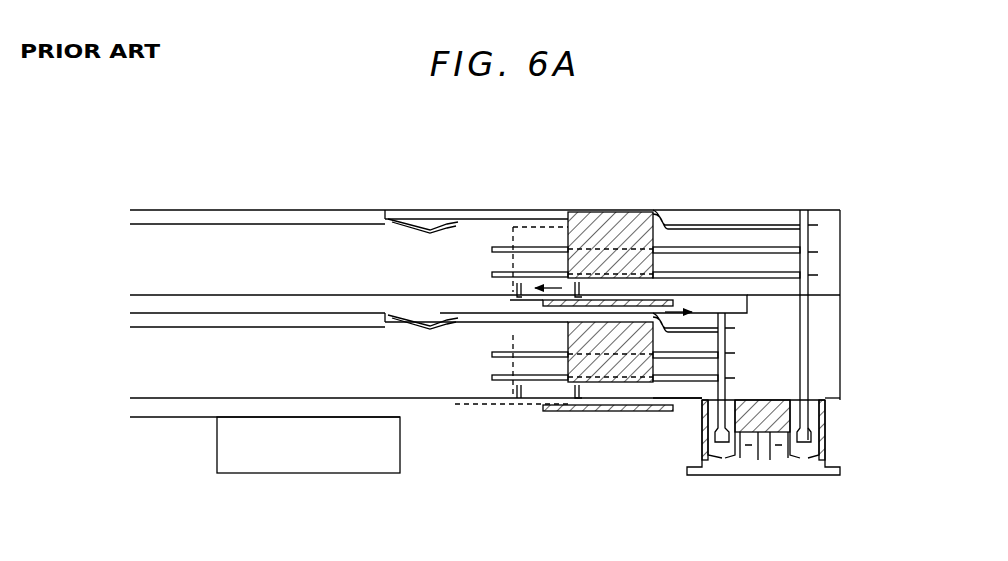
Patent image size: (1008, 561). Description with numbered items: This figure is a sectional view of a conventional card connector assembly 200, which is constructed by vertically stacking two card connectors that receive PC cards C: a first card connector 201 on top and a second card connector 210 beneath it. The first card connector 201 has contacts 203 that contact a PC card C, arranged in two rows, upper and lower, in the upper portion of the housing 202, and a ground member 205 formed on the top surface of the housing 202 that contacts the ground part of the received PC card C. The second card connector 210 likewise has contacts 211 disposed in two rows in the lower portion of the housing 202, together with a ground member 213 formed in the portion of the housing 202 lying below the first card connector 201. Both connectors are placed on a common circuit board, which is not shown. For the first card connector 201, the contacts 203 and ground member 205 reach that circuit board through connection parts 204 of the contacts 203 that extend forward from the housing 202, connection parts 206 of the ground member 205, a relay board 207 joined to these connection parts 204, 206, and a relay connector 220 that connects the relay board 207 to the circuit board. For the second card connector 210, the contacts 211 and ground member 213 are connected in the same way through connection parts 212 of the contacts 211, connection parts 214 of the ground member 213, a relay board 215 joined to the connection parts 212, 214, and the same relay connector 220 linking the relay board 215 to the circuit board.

The PC card C is at (250, 240).
The card connector assembly 200 is at (776, 128).
The first card connector 201 is at (597, 198).
The housing 202 is at (633, 214).
The contacts 203 is at (557, 262).
The connection parts 204 is at (745, 274).
The ground member 205 is at (437, 217).
The connection parts 206 is at (770, 222).
The relay board 207 is at (807, 325).
The second card connector 210 is at (534, 420).
The contacts 211 is at (500, 381).
The connection parts 212 is at (693, 381).
The ground member 213 is at (388, 330).
The connection parts 214 is at (703, 340).
The relay board 215 is at (722, 392).
The relay connector 220 is at (834, 428).